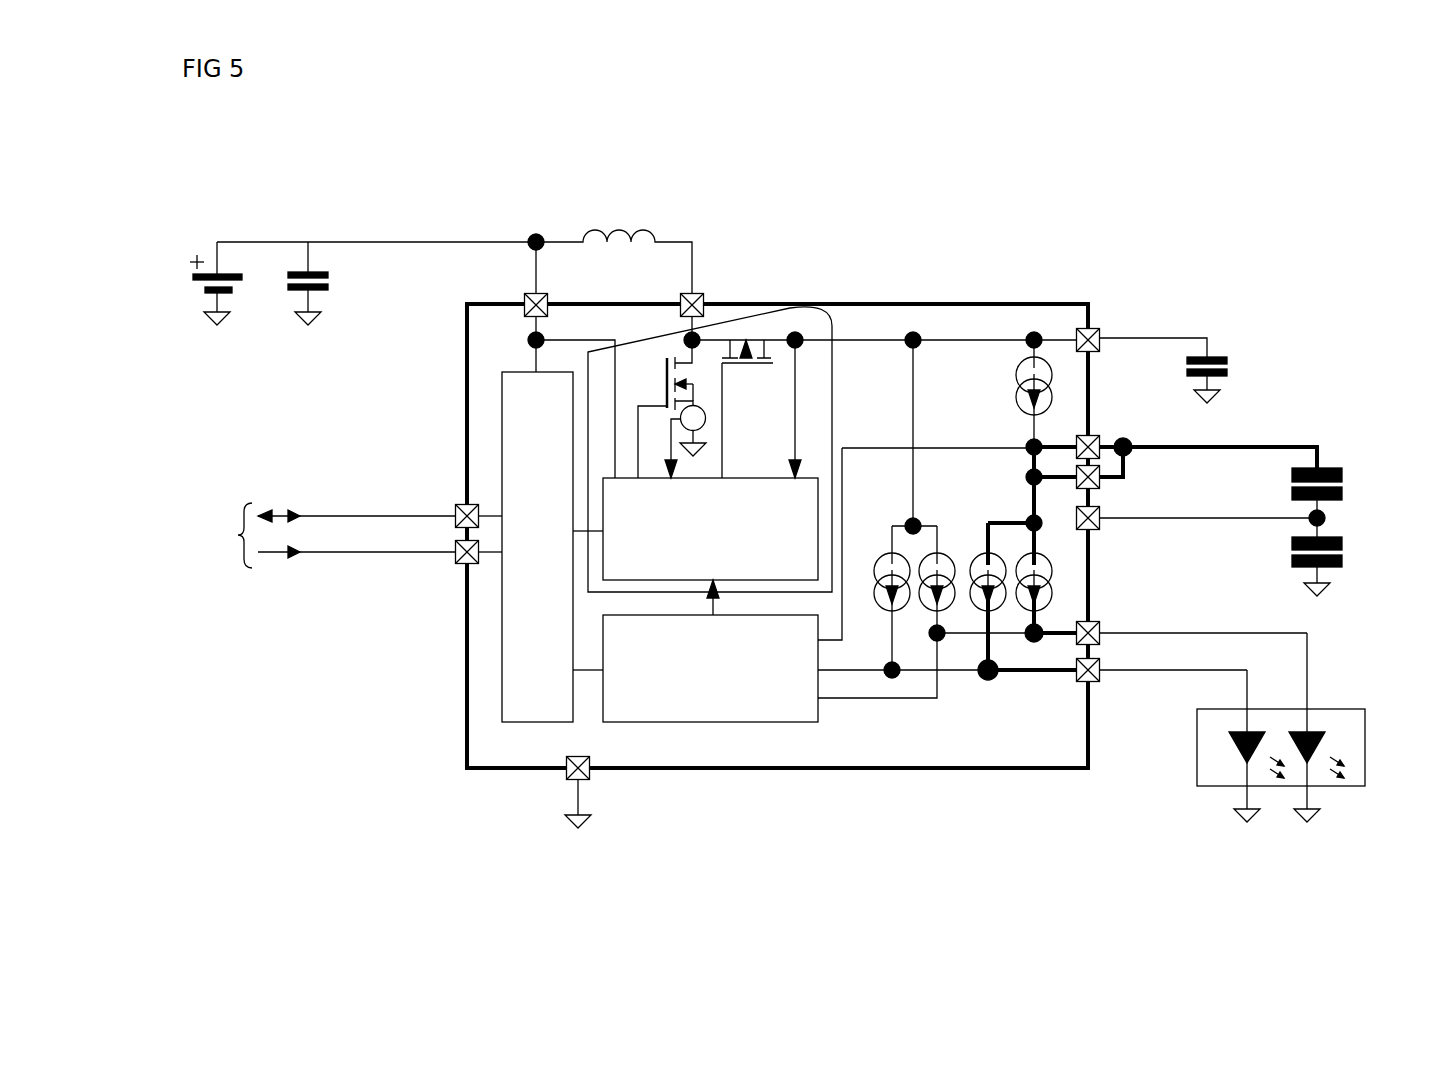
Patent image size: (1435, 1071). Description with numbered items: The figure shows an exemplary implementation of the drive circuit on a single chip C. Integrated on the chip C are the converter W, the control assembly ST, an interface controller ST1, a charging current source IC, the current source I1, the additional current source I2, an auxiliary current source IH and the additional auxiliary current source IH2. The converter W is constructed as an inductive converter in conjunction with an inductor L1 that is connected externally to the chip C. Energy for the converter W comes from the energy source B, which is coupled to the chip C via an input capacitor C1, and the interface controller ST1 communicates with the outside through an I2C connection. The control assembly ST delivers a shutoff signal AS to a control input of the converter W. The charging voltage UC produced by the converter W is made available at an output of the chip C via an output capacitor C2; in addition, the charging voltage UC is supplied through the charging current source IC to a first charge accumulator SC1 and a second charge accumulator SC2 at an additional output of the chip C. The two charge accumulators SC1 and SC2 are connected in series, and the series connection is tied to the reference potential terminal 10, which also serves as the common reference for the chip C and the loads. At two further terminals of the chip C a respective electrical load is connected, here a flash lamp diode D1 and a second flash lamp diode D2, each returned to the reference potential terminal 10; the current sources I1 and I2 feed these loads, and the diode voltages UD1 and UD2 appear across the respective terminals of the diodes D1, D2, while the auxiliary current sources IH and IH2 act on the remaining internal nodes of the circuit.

The energy source B is at (195, 285).
The input capacitor C1 is at (323, 293).
The inductor L1 is at (618, 225).
The interface controller ST1 is at (503, 372).
The converter W is at (831, 306).
The chip C is at (1000, 300).
The charging voltage UC is at (900, 352).
The charging current source IC is at (1016, 382).
The output capacitor C2 is at (1183, 370).
The first charge accumulator SC1 is at (1344, 502).
The second charge accumulator SC2 is at (1344, 558).
The reference potential terminal 10 is at (586, 826).
The I2C interface I2C is at (347, 535).
The additional auxiliary current source IH2 is at (888, 559).
The auxiliary current source IH is at (939, 559).
The additional current source I2 is at (998, 575).
The current source I1 is at (1050, 575).
The shutoff signal AS is at (714, 605).
The control assembly ST is at (738, 724).
The diode voltage 1 UD1 is at (1319, 652).
The diode voltage 2 UD2 is at (1252, 673).
The flash lamp diode D1 is at (1322, 748).
The flash lamp diode D2 is at (1229, 748).